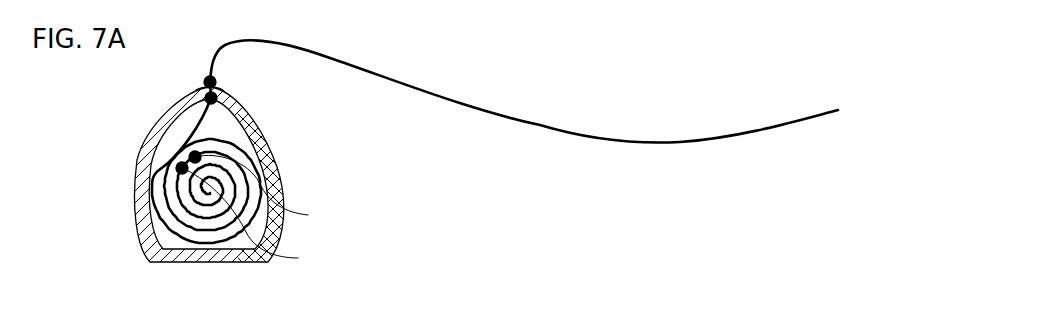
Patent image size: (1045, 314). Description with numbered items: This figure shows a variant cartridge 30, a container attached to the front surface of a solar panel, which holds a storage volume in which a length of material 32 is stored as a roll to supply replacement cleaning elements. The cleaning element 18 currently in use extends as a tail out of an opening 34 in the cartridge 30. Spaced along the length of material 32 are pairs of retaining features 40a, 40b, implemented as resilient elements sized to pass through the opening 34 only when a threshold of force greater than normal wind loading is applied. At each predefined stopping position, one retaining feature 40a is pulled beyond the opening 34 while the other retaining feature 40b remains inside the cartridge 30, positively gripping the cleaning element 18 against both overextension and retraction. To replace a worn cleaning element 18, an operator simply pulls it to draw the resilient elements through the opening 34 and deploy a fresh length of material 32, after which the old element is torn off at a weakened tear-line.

The cleaning element 18 is at (526, 122).
The cartridge 30 is at (138, 182).
The length of material 32 is at (142, 212).
The opening 34 is at (203, 87).
The retaining feature 40a is at (217, 84).
The retaining feature 40b is at (257, 127).